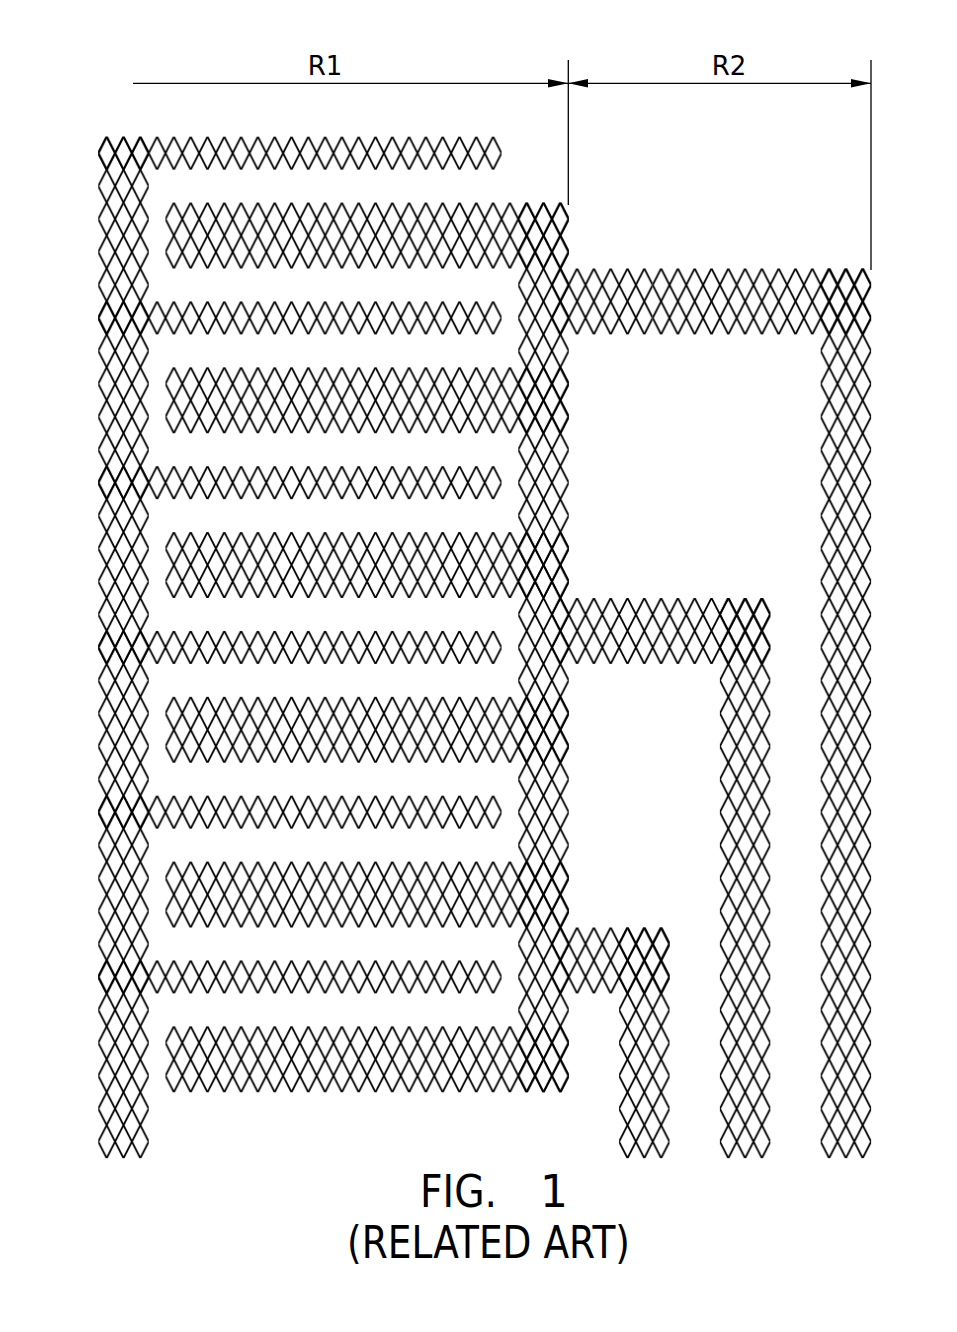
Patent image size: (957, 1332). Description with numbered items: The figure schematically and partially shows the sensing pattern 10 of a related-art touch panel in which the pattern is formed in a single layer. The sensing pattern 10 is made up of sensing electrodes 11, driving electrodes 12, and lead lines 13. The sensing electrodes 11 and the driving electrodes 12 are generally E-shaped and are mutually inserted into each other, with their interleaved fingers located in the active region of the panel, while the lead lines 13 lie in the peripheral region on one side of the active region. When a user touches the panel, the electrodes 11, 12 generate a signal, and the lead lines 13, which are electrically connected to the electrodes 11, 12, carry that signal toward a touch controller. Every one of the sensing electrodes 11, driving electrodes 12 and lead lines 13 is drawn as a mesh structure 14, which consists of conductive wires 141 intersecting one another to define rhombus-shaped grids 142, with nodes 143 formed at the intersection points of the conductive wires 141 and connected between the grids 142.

The sensing pattern 10 is at (483, 34).
The sensing electrodes 11 is at (116, 124).
The driving electrodes 12 is at (531, 190).
The lead lines 13 is at (793, 246).
The mesh structure 14 is at (711, 238).
The conductive wires 141 is at (633, 272).
The grids 142 is at (693, 285).
The nodes 143 is at (796, 261).